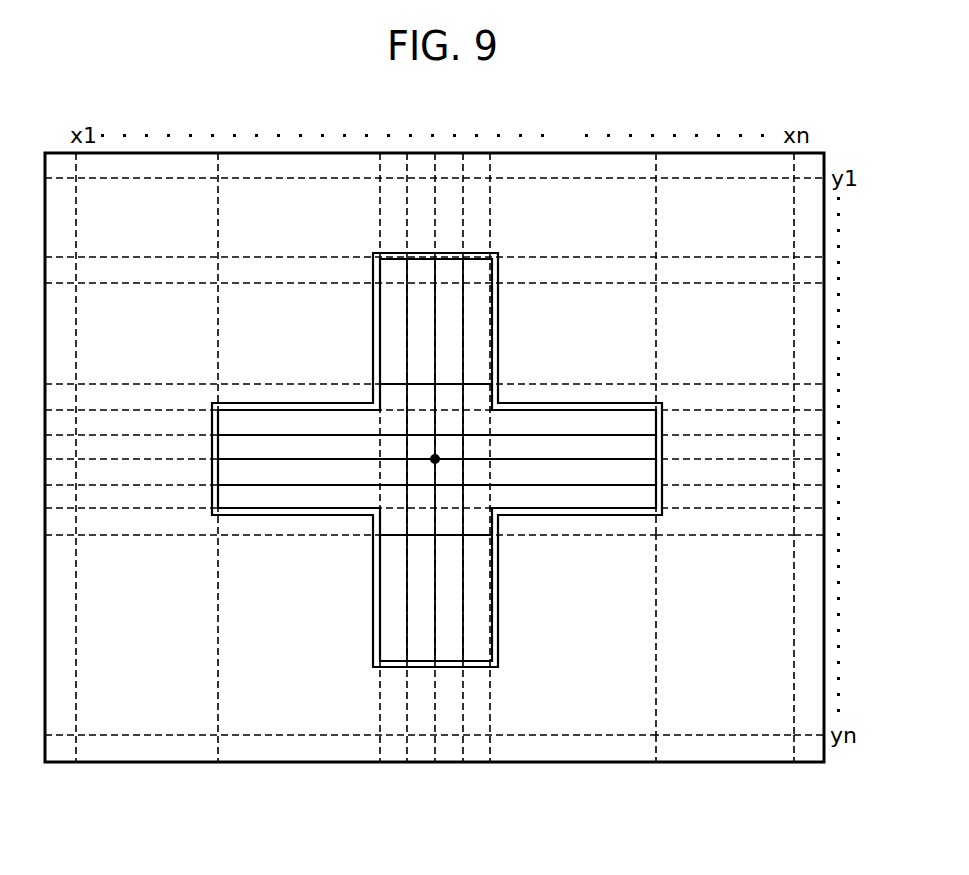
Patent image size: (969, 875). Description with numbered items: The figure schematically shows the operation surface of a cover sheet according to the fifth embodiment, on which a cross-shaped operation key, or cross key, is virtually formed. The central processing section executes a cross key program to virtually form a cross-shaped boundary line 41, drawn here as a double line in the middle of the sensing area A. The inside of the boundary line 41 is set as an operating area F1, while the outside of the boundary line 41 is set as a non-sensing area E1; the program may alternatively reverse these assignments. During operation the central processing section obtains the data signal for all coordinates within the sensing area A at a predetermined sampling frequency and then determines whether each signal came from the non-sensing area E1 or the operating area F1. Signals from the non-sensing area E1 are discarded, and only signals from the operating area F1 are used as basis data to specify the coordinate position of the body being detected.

The sensing area A is at (563, 142).
The operating area F1 is at (482, 322).
The boundary line 41 is at (495, 578).
The non-sensing area E1 is at (780, 650).